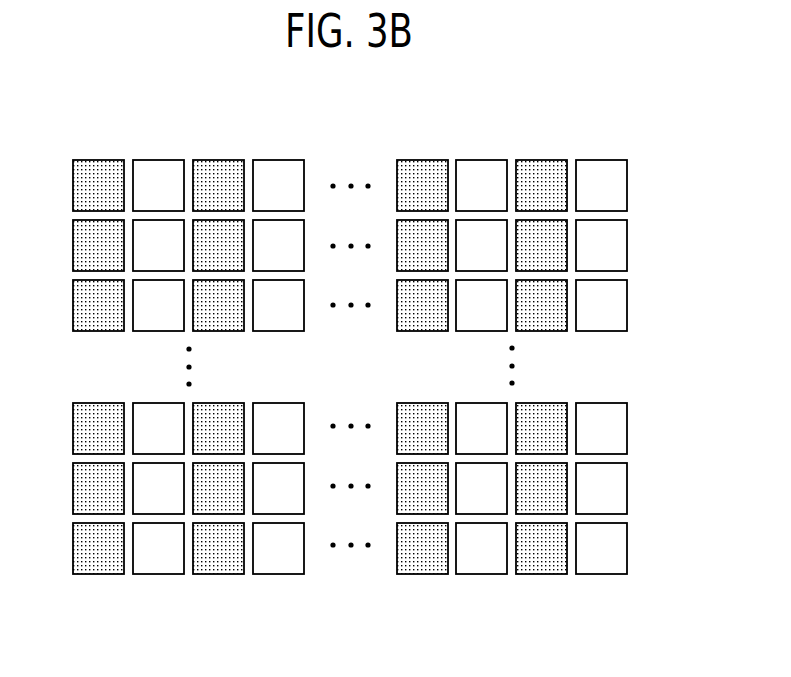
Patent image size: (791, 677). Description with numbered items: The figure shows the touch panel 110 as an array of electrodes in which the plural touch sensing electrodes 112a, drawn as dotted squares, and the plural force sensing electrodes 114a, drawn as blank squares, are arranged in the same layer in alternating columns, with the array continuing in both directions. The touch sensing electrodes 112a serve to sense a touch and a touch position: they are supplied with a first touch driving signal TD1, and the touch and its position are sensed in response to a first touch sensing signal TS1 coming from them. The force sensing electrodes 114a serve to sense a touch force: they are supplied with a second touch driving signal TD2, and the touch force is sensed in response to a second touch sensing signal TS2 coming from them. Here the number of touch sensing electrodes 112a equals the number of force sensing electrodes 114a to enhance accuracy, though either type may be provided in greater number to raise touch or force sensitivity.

The touch panel 110 is at (368, 106).
The touch sensing electrodes 112a is at (100, 160).
The force sensing electrodes 114a is at (163, 160).
The first touch driving signal TD1 is at (82, 576).
The first touch sensing signal TS1 is at (115, 574).
The second touch driving signal TD2 is at (264, 576).
The second touch sensing signal TS2 is at (295, 574).